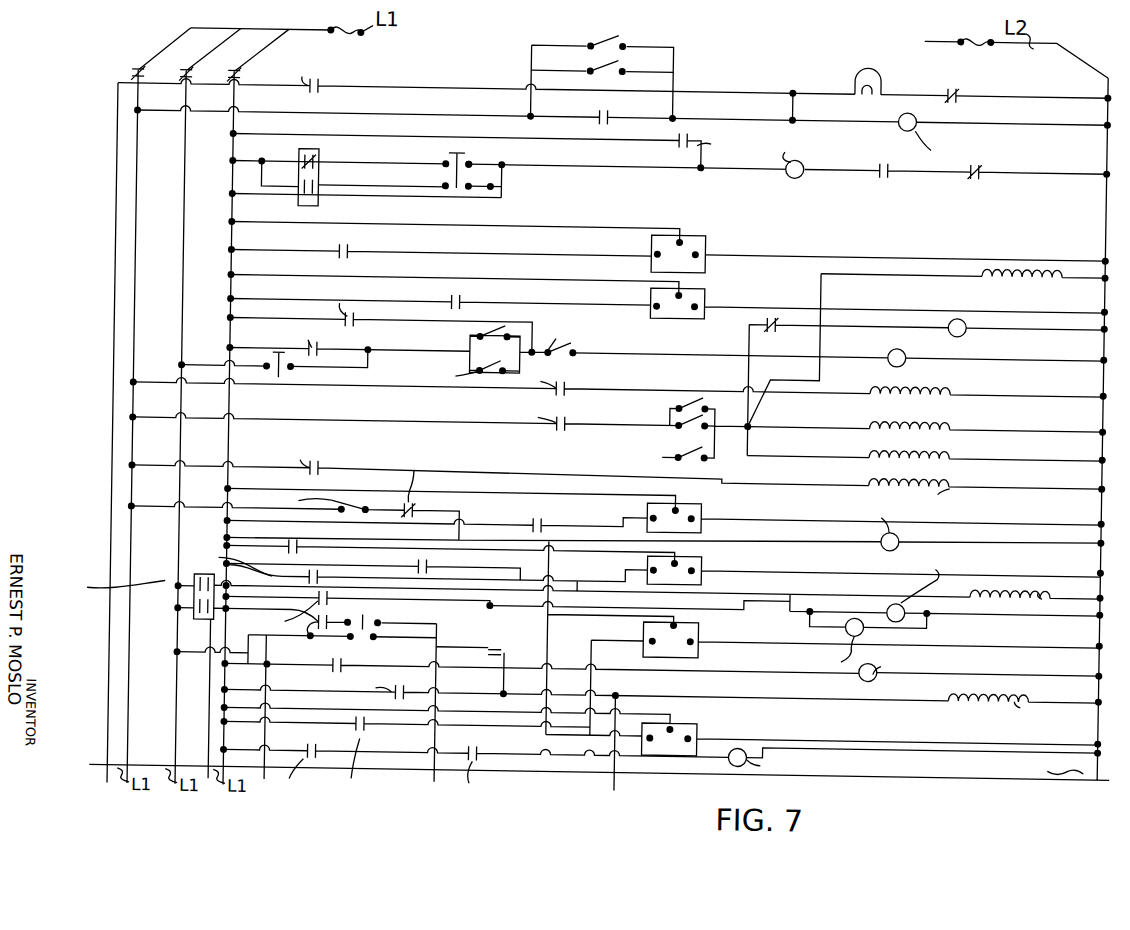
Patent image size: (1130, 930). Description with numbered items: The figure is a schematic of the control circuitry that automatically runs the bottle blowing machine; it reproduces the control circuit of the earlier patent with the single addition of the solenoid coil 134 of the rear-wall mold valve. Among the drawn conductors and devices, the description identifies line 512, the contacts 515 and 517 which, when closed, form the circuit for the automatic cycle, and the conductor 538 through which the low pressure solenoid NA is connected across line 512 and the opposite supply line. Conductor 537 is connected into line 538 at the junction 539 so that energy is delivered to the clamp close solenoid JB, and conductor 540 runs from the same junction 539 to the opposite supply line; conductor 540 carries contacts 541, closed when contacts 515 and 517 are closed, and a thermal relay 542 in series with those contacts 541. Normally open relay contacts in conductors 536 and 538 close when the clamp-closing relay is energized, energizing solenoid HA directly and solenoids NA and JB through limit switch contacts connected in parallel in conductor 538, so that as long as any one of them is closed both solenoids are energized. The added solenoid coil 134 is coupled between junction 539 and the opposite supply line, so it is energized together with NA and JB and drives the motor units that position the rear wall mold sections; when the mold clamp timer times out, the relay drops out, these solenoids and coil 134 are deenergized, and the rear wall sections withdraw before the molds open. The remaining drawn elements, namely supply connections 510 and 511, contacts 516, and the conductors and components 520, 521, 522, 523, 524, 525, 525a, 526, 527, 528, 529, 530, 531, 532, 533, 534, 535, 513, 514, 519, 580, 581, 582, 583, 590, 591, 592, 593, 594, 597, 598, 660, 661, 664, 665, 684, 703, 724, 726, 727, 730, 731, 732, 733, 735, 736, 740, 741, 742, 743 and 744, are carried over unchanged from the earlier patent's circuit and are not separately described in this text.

The contacts 515 is at (130, 70).
The line switch 516 is at (188, 70).
The contacts 517 is at (236, 70).
The supply line L1 510 is at (345, 31).
The supply line L2 511 is at (971, 30).
The power line 520 is at (406, 83).
The limit switch circuit 597 is at (549, 39).
The limit switch 598 is at (585, 68).
The indicator lamp 521 is at (860, 66).
The contact 522 is at (941, 83).
The connecting line 524 is at (793, 116).
The control line 523 is at (382, 110).
The thermal relay 542 is at (600, 115).
The line 531 is at (305, 133).
The line 525 is at (426, 192).
The start cycle switch 525a is at (447, 159).
The cycle selector switch 528 is at (300, 158).
The line 527 is at (298, 186).
The repeat contact 529 is at (317, 202).
The line 727 is at (436, 181).
The switch actuator 530 is at (455, 191).
The line 724 is at (484, 192).
The line 526 is at (598, 168).
The overall timer line 533 is at (555, 224).
The line 532 is at (474, 249).
The solenoid coil 134 is at (1026, 262).
The mold clamp timer line 534 is at (591, 298).
The line 512 is at (160, 188).
The line 514 is at (218, 188).
The line 513 is at (186, 248).
The line 519 is at (118, 283).
The pushbutton switch 730 is at (280, 346).
The pushbutton actuator 731 is at (284, 375).
The line 726 is at (401, 318).
The line 535 is at (461, 345).
The contacts 541 is at (927, 390).
The conductor 540 is at (828, 326).
The conductor 536 is at (599, 384).
The junction 539 is at (754, 418).
The conductor 538 is at (456, 418).
The conductor 537 is at (1077, 445).
The line 581 is at (514, 468).
The line 580 is at (466, 520).
The injection delay timer line 582 is at (1077, 508).
The nozzle forward line 590 is at (348, 560).
The injection timer line 592 is at (1077, 558).
The line 594 is at (556, 564).
The line 593 is at (868, 590).
The line 591 is at (932, 604).
The line 583 is at (505, 606).
The pushbutton switch 740 is at (390, 615).
The selector switch 742 is at (487, 669).
The line 741 is at (270, 670).
The line 743 is at (447, 680).
The pushbutton line 744 is at (308, 634).
The line 703 is at (274, 676).
The booster timer line 660 is at (758, 664).
The injection forward line 661 is at (698, 690).
The line 665 is at (1075, 640).
The line 664 is at (915, 742).
The line 684 is at (636, 751).
The nozzle forward pushbutton 733 is at (186, 584).
The nozzle return pushbutton 735 is at (186, 606).
The line 732 is at (200, 617).
The line 736 is at (210, 690).